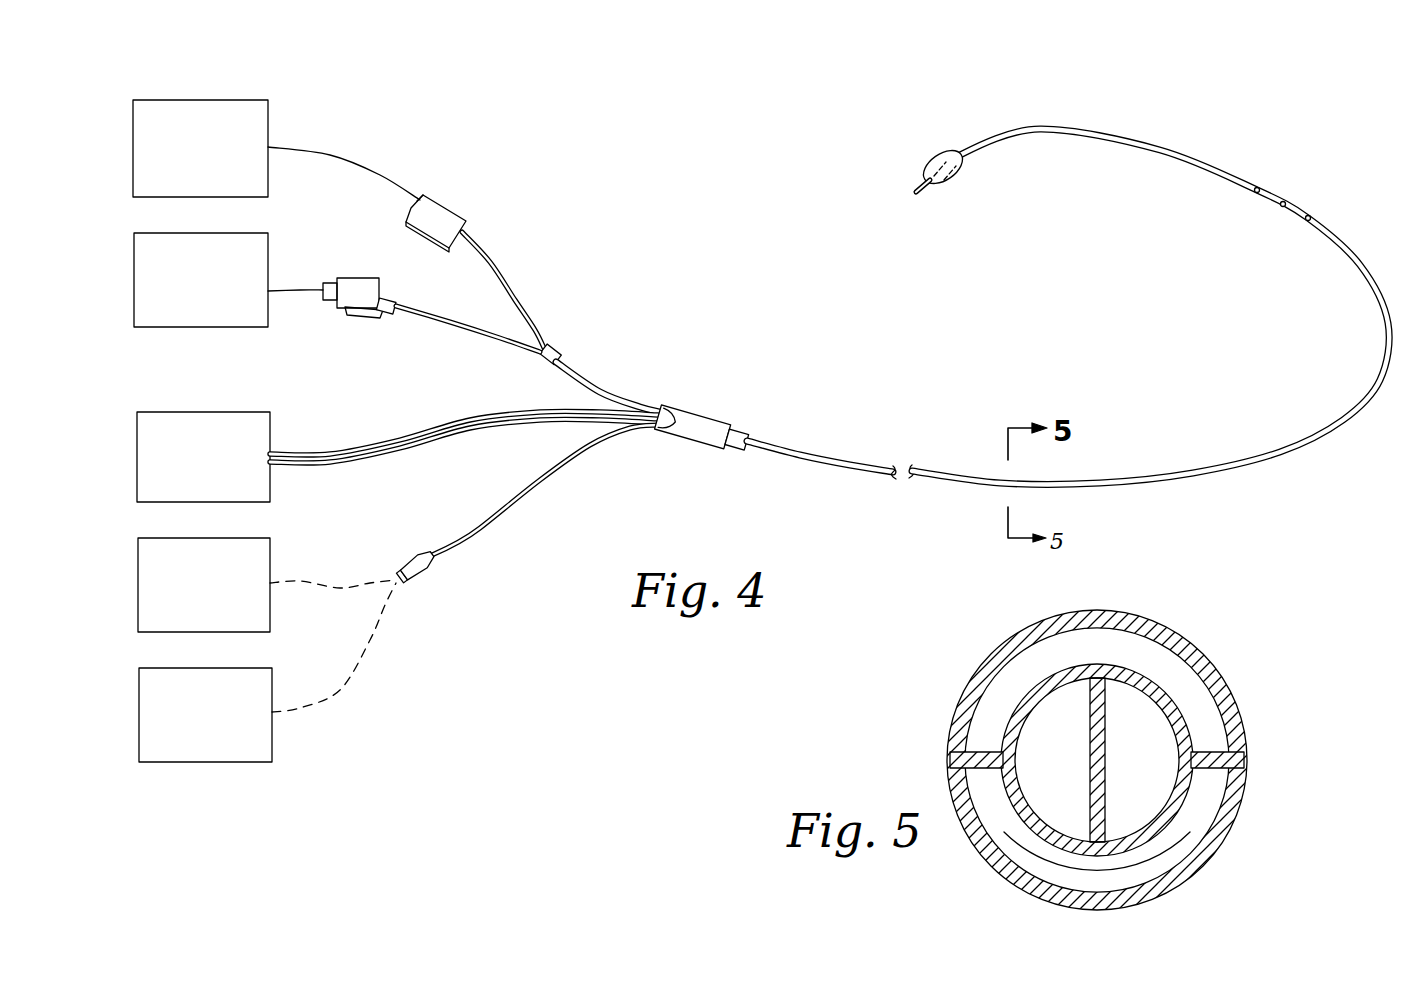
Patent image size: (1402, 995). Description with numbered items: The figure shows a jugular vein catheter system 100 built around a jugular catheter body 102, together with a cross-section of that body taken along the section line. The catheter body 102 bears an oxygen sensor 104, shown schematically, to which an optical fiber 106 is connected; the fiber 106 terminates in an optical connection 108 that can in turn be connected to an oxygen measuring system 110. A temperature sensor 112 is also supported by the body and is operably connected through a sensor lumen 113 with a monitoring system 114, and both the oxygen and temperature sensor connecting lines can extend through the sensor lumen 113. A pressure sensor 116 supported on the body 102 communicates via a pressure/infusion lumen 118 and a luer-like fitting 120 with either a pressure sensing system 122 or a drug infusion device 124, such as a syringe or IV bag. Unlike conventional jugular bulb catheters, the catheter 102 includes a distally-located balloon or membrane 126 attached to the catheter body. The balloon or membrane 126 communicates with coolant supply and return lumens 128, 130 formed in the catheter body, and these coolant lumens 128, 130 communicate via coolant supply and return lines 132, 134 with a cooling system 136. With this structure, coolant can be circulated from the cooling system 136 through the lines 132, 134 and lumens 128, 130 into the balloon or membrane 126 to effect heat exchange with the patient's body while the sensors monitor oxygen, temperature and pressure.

In FIG. 4, the jugular vein catheter system 100 is at (770, 313).
In FIG. 4, the jugular catheter body 102 is at (818, 455).
In FIG. 5, the jugular catheter body 102 is at (1208, 668).
In FIG. 4, the oxygen sensor 104 is at (1258, 188).
In FIG. 4, the optical fiber 106 is at (498, 268).
In FIG. 4, the optical connection 108 is at (452, 203).
In FIG. 4, the oxygen measuring system 110 is at (133, 152).
In FIG. 4, the temperature sensor 112 is at (1284, 208).
In FIG. 5, the sensor lumen 113 is at (1140, 763).
In FIG. 4, the monitoring system 114 is at (134, 283).
In FIG. 4, the pressure sensor 116 is at (1309, 216).
In FIG. 5, the pressure/infusion lumen 118 is at (1047, 757).
In FIG. 4, the luer-like fitting 120 is at (432, 572).
In FIG. 4, the pressure sensing system 122 is at (138, 585).
In FIG. 4, the drug infusion device 124 is at (139, 713).
In FIG. 4, the balloon or membrane 126 is at (935, 160).
In FIG. 5, the coolant supply lumen 128 is at (1012, 685).
In FIG. 5, the coolant return lumen 130 is at (1195, 820).
In FIG. 4, the coolant supply line 132 is at (458, 420).
In FIG. 4, the coolant return line 134 is at (366, 464).
In FIG. 4, the cooling system 136 is at (137, 457).